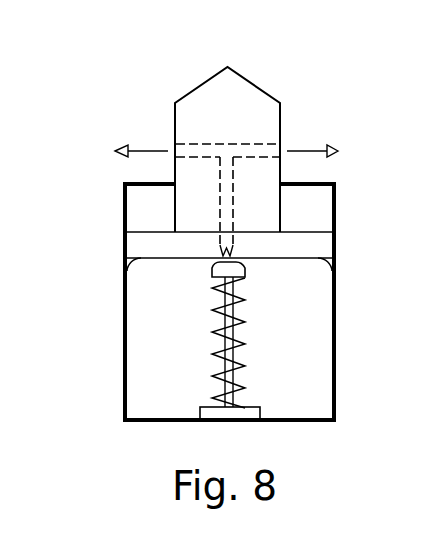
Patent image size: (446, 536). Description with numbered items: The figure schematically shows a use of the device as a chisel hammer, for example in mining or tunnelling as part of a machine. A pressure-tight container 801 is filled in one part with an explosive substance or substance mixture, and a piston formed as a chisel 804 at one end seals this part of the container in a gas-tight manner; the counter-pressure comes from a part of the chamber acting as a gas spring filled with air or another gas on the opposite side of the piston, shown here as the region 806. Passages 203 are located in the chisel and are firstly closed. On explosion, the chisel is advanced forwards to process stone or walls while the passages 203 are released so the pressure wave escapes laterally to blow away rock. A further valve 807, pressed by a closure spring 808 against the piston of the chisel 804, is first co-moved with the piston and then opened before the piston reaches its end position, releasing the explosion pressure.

The pressure-tight container 801 is at (337, 320).
The chisel 804 is at (240, 90).
The upper chamber / guide plate 806 is at (336, 196).
The passages 203 is at (220, 204).
The valve 807 is at (210, 268).
The closure spring 808 is at (245, 363).